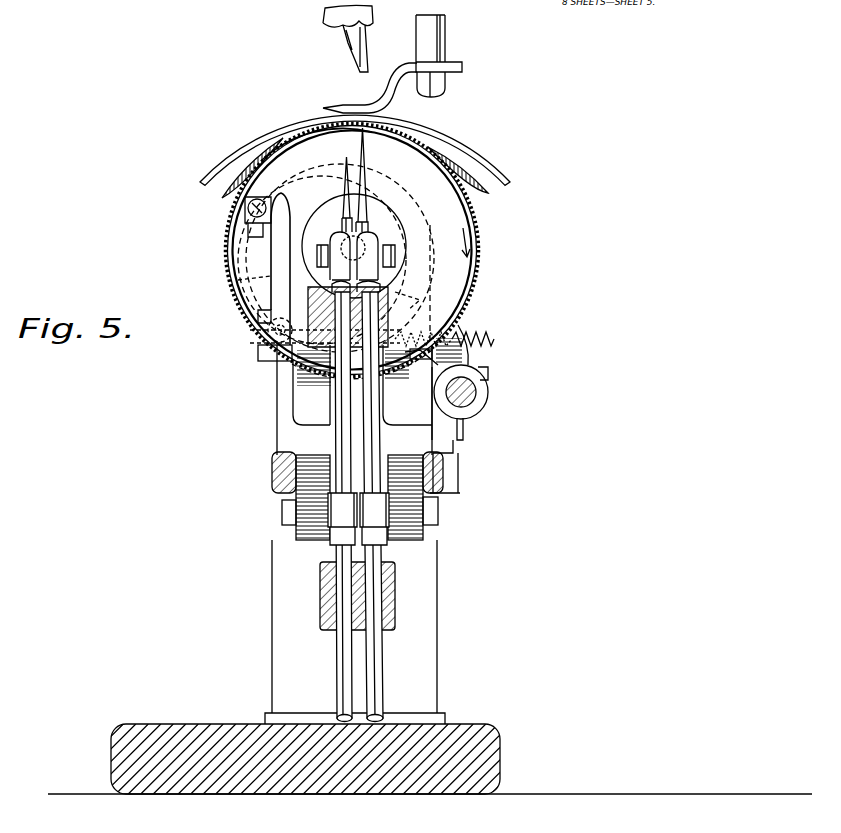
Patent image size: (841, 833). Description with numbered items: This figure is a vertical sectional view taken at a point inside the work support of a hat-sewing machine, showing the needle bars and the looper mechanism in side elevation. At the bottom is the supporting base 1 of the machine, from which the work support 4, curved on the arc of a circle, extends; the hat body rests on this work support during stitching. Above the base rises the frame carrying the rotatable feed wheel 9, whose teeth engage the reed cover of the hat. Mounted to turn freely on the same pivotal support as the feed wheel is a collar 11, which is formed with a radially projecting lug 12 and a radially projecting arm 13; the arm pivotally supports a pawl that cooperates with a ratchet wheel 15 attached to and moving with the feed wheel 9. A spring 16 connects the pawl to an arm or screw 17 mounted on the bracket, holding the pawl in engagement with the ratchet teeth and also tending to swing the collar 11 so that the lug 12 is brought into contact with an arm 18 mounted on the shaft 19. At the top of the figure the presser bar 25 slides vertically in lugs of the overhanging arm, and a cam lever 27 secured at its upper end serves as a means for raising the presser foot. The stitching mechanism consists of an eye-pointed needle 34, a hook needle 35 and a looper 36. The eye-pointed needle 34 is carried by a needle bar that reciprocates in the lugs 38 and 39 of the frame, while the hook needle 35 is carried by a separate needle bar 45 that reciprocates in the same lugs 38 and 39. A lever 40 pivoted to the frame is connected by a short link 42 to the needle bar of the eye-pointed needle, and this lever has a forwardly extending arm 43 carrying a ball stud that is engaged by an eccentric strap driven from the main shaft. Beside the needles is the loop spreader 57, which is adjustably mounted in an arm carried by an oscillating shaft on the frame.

The supporting base 1 is at (477, 760).
The work support 4 is at (276, 128).
The feed wheel 9 is at (493, 262).
The collar 11 is at (415, 215).
The radially projecting lug 12 is at (414, 301).
The radially projecting arm 13 is at (262, 326).
The ratchet wheel 15 is at (376, 190).
The spring 16 is at (412, 372).
The arm or screw 17 is at (238, 281).
The arm 18 is at (465, 310).
The shaft 19 is at (468, 405).
The presser bar 25 is at (438, 50).
The cam lever 27 is at (332, 108).
The eye-pointed needle 34 is at (367, 175).
The hook needle 35 is at (345, 162).
The looper 36 is at (348, 30).
The lug 38 is at (396, 297).
The lug 39 is at (398, 618).
The lever 40 is at (445, 466).
The short link 42 is at (430, 498).
The forwardly extending arm 43 is at (294, 503).
The needle bar 45 is at (345, 422).
The loop spreader 57 is at (302, 152).